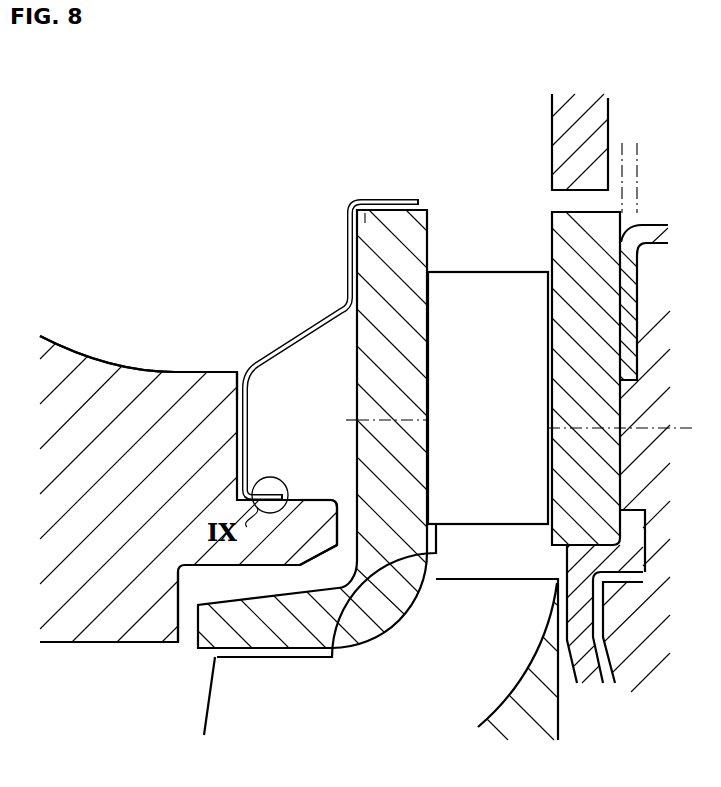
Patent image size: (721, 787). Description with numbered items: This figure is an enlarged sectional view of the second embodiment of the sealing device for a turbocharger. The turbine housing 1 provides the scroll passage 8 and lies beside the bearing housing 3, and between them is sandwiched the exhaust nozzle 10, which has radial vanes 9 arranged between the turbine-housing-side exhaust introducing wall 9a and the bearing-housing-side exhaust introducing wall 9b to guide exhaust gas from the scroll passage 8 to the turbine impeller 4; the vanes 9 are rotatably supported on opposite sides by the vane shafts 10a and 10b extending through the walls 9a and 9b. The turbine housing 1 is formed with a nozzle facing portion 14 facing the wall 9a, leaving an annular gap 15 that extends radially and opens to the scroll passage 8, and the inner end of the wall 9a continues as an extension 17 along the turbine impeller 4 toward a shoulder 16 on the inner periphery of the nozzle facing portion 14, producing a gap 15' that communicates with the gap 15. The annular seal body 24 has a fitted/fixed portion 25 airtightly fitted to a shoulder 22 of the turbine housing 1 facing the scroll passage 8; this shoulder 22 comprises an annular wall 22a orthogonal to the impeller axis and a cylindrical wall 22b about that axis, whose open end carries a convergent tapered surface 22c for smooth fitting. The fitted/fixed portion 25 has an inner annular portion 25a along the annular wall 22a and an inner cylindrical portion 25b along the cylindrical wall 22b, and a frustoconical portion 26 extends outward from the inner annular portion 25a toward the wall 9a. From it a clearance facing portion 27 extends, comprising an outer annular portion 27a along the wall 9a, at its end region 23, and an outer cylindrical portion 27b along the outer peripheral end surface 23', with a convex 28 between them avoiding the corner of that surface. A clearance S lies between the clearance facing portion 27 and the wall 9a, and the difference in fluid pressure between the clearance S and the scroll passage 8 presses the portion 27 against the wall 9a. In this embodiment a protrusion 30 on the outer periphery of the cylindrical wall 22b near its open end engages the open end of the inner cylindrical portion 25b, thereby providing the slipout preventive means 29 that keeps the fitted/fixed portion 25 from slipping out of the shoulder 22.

The turbine housing 1 is at (103, 362).
The bearing housing 3 is at (710, 322).
The turbine impeller 4 is at (230, 700).
The scroll passage 8 is at (180, 214).
The radial vanes 9 is at (500, 292).
The turbine-housing-side exhaust introducing wall 9a is at (431, 216).
The bearing-housing-side exhaust introducing wall 9b is at (551, 240).
The exhaust nozzle 10 is at (481, 168).
The turbine-housing-side vane shaft 10a is at (430, 404).
The bearing-housing-side vane shaft 10b is at (636, 428).
The nozzle facing portion 14 is at (382, 640).
The annular gap 15 is at (261, 569).
The gap 15' is at (146, 625).
The shoulder 16 is at (200, 567).
The extension 17 is at (300, 642).
The shoulder 22 is at (340, 487).
The annular wall 22a is at (237, 368).
The cylindrical wall 22b is at (283, 493).
The convergent tapered surface 22c is at (331, 496).
The contact point 23 is at (342, 159).
The outer peripheral end surface 23' is at (383, 171).
The seal body 24 is at (303, 326).
The fitted/fixed portion 25 is at (250, 437).
The inner annular portion 25a is at (245, 422).
The inner cylindrical portion 25b is at (266, 492).
The frustoconical portion 26 is at (286, 343).
The clearance facing portion 27 is at (333, 213).
The outer annular portion 27a is at (347, 256).
The outer cylindrical portion 27b is at (403, 200).
The convex 28 is at (345, 200).
The slipout preventive means 29 is at (338, 421).
The protrusion 30 is at (305, 493).
The clearance S is at (369, 199).